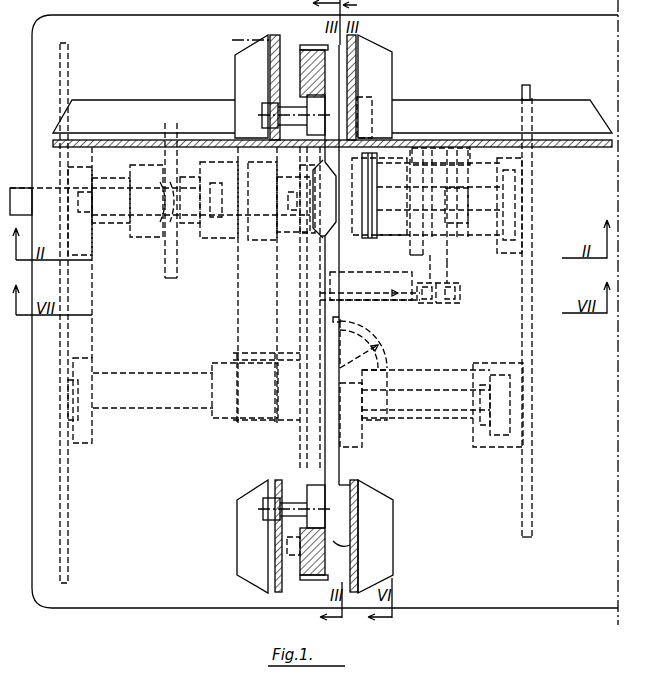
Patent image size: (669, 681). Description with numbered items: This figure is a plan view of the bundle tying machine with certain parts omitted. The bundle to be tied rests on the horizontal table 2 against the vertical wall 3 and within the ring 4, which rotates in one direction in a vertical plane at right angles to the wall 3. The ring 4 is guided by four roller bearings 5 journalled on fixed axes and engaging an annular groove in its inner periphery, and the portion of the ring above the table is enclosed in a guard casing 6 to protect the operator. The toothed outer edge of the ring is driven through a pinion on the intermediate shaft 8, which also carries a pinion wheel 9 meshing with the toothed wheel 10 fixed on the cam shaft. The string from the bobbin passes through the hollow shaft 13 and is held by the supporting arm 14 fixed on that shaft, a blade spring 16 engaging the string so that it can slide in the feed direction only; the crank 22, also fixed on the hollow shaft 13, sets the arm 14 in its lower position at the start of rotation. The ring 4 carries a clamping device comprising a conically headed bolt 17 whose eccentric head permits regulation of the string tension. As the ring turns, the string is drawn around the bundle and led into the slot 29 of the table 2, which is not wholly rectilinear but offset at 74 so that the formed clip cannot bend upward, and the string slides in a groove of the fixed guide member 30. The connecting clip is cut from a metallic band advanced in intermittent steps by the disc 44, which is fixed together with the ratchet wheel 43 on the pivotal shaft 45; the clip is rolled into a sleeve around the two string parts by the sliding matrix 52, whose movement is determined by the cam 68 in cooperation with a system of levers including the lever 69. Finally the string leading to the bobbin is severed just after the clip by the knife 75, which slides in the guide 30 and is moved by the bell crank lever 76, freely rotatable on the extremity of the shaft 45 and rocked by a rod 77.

The horizontal table 2 is at (147, 607).
The vertical wall 3 is at (113, 140).
The ring 4 is at (311, 46).
The roller bearings 5 is at (318, 113).
The guard casing 6 is at (270, 71).
The intermediate shaft 8 is at (177, 409).
The pinion wheel 9 is at (247, 421).
The toothed wheel 10 is at (240, 298).
The hollow shaft 13 is at (428, 411).
The supporting arm 14 is at (390, 346).
The blade spring 16 is at (350, 345).
The conically headed bolt 17 is at (358, 549).
The crank 22 is at (485, 419).
The slot 29 is at (338, 459).
The fixed guide member 30 is at (398, 303).
The ratchet wheel 43 is at (464, 159).
The disc 44 is at (458, 203).
The pivotal shaft 45 is at (447, 273).
The sliding matrix 52 is at (228, 215).
The cam 68 is at (170, 279).
The lever 69 is at (111, 212).
The offset 74 is at (345, 200).
The knife 75 is at (378, 292).
The bell crank lever 76 is at (446, 304).
The rod 77 is at (465, 295).